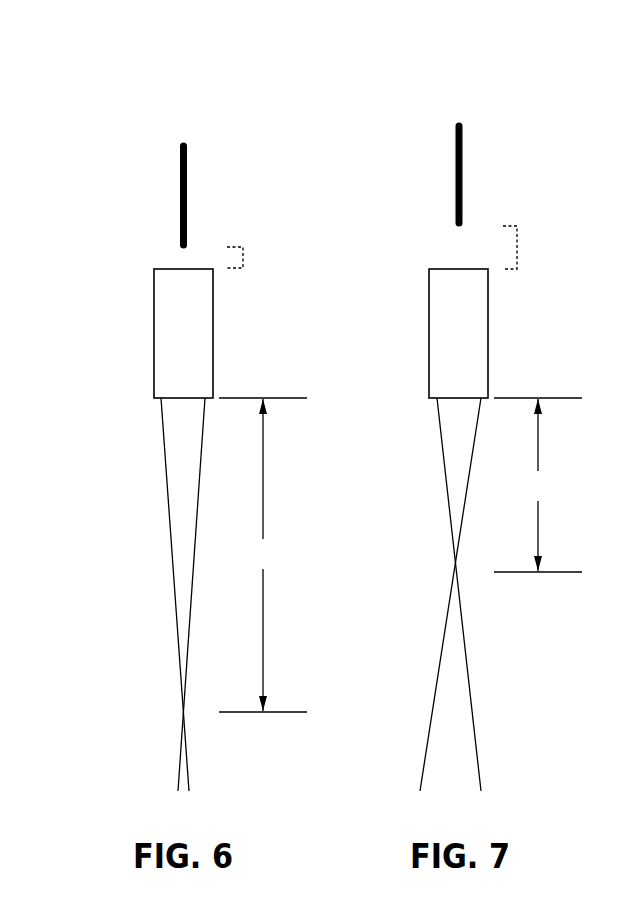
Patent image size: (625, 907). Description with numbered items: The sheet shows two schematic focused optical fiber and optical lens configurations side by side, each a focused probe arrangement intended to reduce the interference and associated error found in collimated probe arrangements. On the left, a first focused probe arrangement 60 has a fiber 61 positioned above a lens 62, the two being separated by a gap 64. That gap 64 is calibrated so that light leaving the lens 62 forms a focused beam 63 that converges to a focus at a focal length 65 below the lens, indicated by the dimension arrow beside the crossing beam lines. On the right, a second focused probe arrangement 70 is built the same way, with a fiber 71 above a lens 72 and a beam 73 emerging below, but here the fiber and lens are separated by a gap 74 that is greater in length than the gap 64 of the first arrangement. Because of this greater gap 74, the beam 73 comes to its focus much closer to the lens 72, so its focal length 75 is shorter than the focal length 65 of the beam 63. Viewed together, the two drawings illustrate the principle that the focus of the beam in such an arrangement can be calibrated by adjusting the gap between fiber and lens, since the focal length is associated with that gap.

In FIG. 6, the focused probe arrangement 60 is at (158, 106).
In FIG. 6, the fiber 61 is at (180, 197).
In FIG. 6, the lens 62 is at (153, 341).
In FIG. 6, the focused beam 63 is at (186, 481).
In FIG. 6, the gap 64 is at (243, 257).
In FIG. 6, the focal length 65 is at (263, 555).
In FIG. 7, the focused probe arrangement 70 is at (421, 106).
In FIG. 7, the fiber 71 is at (455, 176).
In FIG. 7, the lens 72 is at (428, 340).
In FIG. 7, the beam 73 is at (462, 481).
In FIG. 7, the gap 74 is at (517, 245).
In FIG. 7, the focal length 75 is at (538, 485).